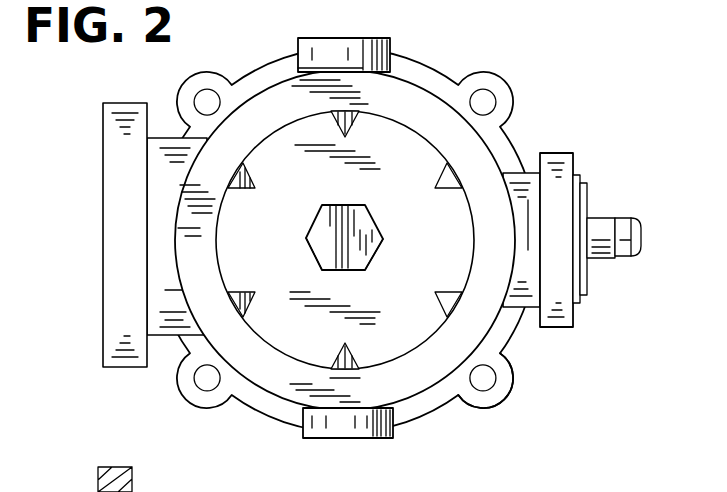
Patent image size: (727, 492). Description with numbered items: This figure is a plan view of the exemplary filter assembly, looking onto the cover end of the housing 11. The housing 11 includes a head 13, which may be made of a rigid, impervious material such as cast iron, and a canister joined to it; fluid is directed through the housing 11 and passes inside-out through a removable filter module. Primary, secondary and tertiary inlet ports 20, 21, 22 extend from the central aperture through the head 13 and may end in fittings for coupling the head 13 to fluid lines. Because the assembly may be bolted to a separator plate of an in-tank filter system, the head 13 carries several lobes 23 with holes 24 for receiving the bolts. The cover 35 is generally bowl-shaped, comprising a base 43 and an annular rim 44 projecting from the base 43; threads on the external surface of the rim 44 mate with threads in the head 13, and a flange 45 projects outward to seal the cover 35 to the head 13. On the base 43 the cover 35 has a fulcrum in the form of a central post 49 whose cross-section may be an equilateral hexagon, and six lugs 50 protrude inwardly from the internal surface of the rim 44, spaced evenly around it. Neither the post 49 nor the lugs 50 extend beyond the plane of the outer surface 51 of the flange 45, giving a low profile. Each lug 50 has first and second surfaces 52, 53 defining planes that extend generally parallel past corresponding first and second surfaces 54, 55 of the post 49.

The housing 11 is at (435, 68).
The head 13 is at (129, 221).
The primary inlet port 20 is at (103, 270).
The secondary inlet port 21 is at (588, 202).
The tertiary inlet port 22 is at (357, 440).
The lobes 23 is at (515, 385).
The holes 24 is at (484, 391).
The cover 35 is at (267, 76).
The base 43 is at (300, 190).
The annular rim 44 is at (394, 122).
The flange 45 is at (218, 313).
The central post 49 is at (332, 222).
The lugs 50 is at (241, 303).
The outer surface 51 is at (485, 222).
The first surface 52 is at (350, 345).
The second surface 53 is at (344, 347).
The first surface 54 is at (312, 247).
The second surface 55 is at (378, 249).